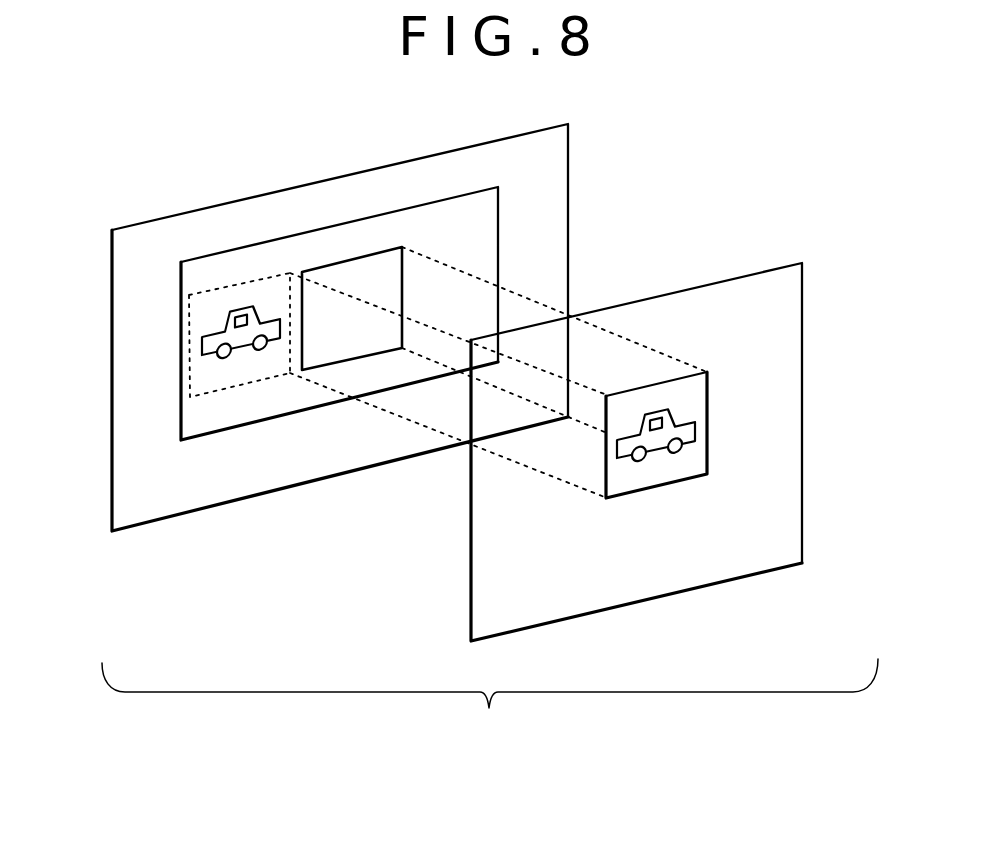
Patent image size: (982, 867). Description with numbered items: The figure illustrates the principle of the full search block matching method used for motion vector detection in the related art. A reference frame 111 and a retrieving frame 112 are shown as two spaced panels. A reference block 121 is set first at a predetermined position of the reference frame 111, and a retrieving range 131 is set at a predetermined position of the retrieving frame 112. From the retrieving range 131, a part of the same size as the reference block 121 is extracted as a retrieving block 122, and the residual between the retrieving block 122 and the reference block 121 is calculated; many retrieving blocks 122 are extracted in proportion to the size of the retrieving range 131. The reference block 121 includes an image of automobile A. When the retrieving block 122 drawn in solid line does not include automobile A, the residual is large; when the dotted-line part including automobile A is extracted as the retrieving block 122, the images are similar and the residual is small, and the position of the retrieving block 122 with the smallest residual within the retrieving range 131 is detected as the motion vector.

The reference frame 111 is at (470, 555).
The retrieving frame 112 is at (568, 187).
The reference block 121 is at (647, 493).
The retrieving block 122 is at (347, 260).
The retrieving range 131 is at (500, 238).
The automobile A is at (202, 347).